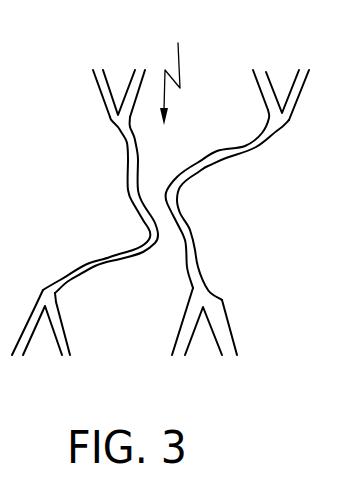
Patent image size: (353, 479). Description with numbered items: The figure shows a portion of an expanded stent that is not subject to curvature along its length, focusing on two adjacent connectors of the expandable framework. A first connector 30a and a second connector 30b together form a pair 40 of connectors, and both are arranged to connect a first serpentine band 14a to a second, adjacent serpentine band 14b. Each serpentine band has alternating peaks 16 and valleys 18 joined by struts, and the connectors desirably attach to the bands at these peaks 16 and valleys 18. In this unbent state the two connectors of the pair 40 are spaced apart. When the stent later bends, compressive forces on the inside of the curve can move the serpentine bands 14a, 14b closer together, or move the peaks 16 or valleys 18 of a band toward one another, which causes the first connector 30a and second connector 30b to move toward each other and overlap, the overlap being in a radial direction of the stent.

The first serpentine band 14a is at (266, 77).
The second serpentine band 14b is at (67, 360).
The peak 16 is at (286, 119).
The valley 18 is at (220, 302).
The first connector 30a is at (249, 153).
The second connector 30b is at (128, 187).
The pair of connectors 40 is at (177, 71).